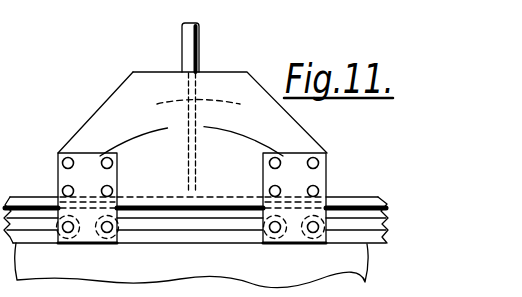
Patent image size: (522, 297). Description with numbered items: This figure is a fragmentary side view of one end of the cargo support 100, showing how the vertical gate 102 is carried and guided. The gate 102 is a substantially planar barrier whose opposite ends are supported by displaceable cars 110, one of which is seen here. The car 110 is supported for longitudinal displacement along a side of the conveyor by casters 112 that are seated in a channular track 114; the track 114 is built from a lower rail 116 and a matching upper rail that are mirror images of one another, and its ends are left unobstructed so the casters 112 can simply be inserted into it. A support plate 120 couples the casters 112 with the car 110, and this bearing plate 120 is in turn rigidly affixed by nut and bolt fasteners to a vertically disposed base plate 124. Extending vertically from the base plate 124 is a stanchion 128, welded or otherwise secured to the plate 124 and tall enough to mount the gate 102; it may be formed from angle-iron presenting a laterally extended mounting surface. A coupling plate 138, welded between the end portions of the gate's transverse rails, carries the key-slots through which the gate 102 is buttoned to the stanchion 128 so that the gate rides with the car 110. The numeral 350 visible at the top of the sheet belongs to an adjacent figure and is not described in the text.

The cargo support 100 is at (176, 34).
The vertical gate 102 is at (199, 38).
The displaceable car 110 is at (183, 86).
The casters 112 is at (122, 226).
The channular track 114 is at (190, 214).
The lower rail 116 is at (197, 249).
The support plate 120 is at (191, 135).
The base plate 124 is at (116, 108).
The stanchion 128 is at (234, 132).
The coupling plate 138 is at (180, 107).
The reference numeral from adjacent figure 350 is at (93, 9).